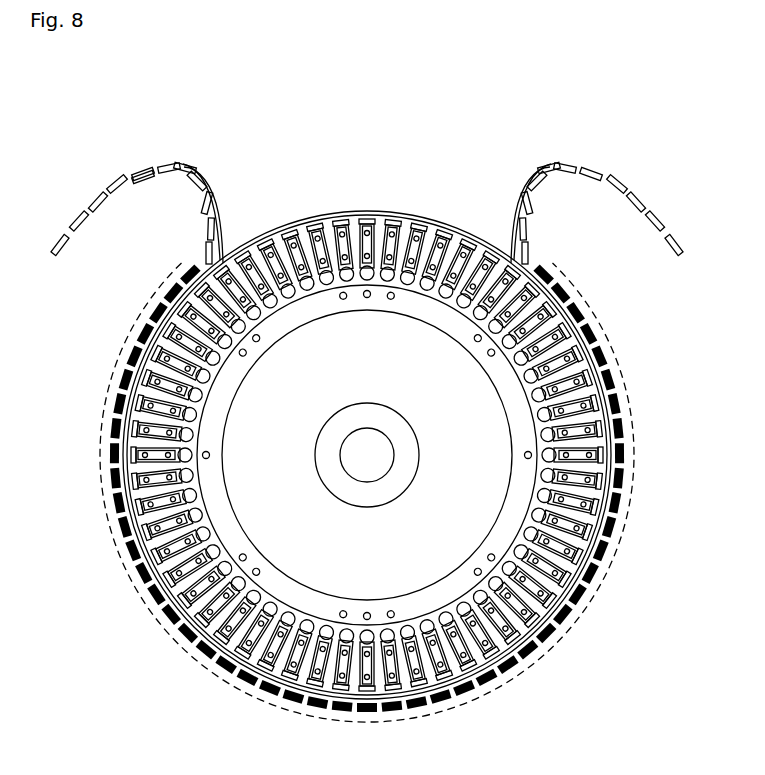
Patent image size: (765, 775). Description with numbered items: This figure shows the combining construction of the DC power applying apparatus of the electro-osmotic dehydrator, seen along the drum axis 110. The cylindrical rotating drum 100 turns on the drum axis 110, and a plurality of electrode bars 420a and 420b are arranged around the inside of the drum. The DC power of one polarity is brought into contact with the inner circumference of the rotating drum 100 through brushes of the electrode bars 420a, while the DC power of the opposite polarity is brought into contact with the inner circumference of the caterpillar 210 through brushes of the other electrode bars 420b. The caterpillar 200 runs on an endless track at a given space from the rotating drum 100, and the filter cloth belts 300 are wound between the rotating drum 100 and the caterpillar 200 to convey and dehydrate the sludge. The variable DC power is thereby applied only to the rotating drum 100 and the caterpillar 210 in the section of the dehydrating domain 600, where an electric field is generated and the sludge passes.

The rotating drum 100 is at (381, 215).
The drum axis 110 is at (368, 452).
The caterpillar 200 is at (100, 204).
The caterpillar 210 is at (370, 705).
The filter cloth belt 300 is at (116, 122).
The electrode bar 420a is at (452, 245).
The electrode bar 420b is at (128, 433).
The dehydrating domain 600 is at (165, 282).